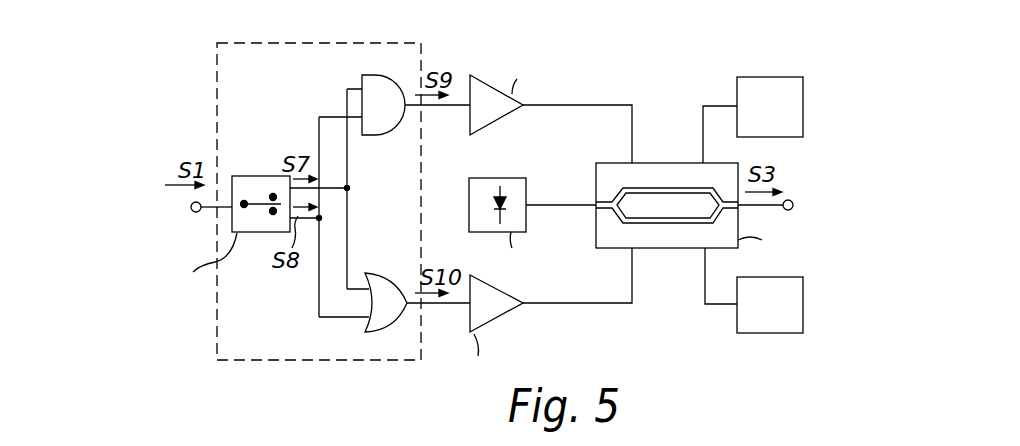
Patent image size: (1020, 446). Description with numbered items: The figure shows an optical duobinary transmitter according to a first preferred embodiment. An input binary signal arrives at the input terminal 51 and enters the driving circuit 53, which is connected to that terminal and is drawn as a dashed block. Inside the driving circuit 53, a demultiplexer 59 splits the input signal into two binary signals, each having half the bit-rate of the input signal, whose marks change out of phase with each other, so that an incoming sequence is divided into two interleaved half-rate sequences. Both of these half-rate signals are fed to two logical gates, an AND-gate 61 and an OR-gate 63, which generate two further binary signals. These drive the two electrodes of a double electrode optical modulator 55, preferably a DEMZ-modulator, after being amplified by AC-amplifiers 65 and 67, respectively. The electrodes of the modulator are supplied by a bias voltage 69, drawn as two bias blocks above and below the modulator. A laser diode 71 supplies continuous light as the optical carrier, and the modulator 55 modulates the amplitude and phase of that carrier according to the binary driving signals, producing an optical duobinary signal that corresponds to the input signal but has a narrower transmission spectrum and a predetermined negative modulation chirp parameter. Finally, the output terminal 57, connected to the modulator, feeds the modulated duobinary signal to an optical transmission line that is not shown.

The input terminal 51 is at (190, 207).
The driving circuit 53 is at (230, 43).
The double electrode optical modulator 55 is at (665, 163).
The output terminal 57 is at (793, 201).
The demultiplexer 59 is at (248, 176).
The logical gate 61 is at (378, 75).
The logical gate 63 is at (368, 332).
The AC-amplifier 65 is at (483, 88).
The AC-amplifier 67 is at (509, 312).
The bias voltage 69 is at (768, 77).
The laser diode 71 is at (510, 178).